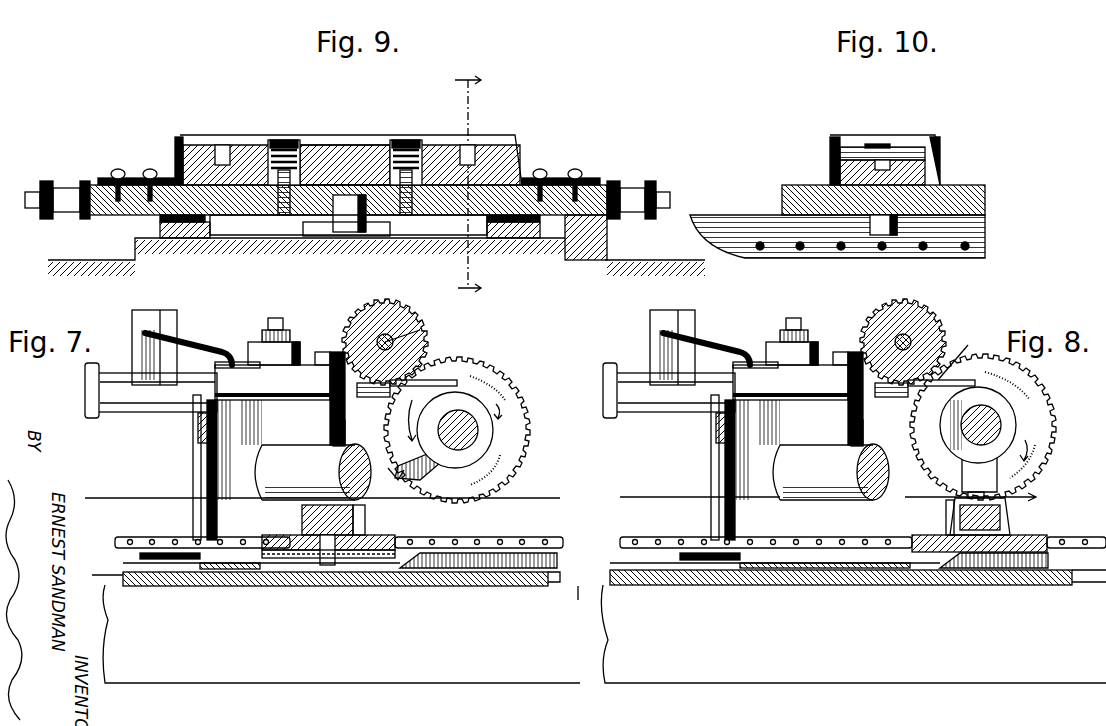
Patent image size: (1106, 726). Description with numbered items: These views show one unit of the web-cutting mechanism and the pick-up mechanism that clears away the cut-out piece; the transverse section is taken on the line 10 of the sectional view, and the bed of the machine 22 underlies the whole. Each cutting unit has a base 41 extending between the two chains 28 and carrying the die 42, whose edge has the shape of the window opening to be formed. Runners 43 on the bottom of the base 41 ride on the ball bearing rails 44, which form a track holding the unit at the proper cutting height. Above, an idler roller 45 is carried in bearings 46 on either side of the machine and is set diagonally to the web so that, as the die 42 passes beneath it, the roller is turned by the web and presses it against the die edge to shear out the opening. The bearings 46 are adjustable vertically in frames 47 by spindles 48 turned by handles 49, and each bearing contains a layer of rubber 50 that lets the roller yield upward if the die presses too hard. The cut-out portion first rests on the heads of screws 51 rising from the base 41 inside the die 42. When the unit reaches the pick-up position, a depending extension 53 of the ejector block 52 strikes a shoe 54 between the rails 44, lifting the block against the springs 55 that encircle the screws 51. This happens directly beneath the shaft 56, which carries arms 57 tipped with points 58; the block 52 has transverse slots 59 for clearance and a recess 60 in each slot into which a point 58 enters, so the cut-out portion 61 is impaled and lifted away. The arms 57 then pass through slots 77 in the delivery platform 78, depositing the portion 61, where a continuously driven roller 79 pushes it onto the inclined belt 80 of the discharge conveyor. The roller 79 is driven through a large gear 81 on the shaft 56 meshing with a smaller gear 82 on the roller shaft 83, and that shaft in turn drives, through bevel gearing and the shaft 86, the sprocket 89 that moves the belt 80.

In FIG. 9, the section line 10 is at (476, 180).
In FIG. 7, the machine bed 22 is at (336, 629).
In FIG. 8, the machine bed 22 is at (853, 634).
In FIG. 9, the chains 28 is at (53, 183).
In FIG. 7, the chains 28 is at (512, 537).
In FIG. 8, the chains 28 is at (1080, 537).
In FIG. 9, the base 41 is at (440, 212).
In FIG. 10, the base 41 is at (797, 185).
In FIG. 7, the base 41 is at (398, 545).
In FIG. 8, the base 41 is at (925, 552).
In FIG. 9, the die 42 is at (523, 158).
In FIG. 10, the die 42 is at (940, 153).
In FIG. 7, the die 42 is at (365, 521).
In FIG. 9, the runners 43 is at (160, 219).
In FIG. 7, the runners 43 is at (378, 562).
In FIG. 9, the ball bearing rails 44 is at (180, 240).
In FIG. 7, the ball bearing rails 44 is at (190, 578).
In FIG. 8, the ball bearing rails 44 is at (728, 578).
In FIG. 7, the idler roller 45 is at (313, 472).
In FIG. 8, the idler roller 45 is at (831, 472).
In FIG. 7, the bearings 46 is at (205, 455).
In FIG. 7, the frames 47 is at (207, 470).
In FIG. 8, the frames 47 is at (700, 470).
In FIG. 7, the spindles 48 is at (280, 318).
In FIG. 7, the handles 49 is at (205, 345).
In FIG. 8, the handles 49 is at (706, 335).
In FIG. 7, the layer of rubber 50 is at (198, 430).
In FIG. 9, the screws 51 is at (285, 147).
In FIG. 10, the screws 51 is at (878, 144).
In FIG. 9, the ejector block 52 is at (332, 145).
In FIG. 10, the ejector block 52 is at (925, 175).
In FIG. 7, the ejector block 52 is at (312, 530).
In FIG. 8, the ejector block 52 is at (1005, 512).
In FIG. 9, the depending extension 53 is at (352, 232).
In FIG. 10, the depending extension 53 is at (882, 235).
In FIG. 7, the depending extension 53 is at (334, 566).
In FIG. 9, the shoe 54 is at (315, 236).
In FIG. 7, the shoe 54 is at (470, 568).
In FIG. 8, the shoe 54 is at (975, 568).
In FIG. 9, the springs 55 is at (275, 150).
In FIG. 7, the shaft 56 is at (470, 414).
In FIG. 8, the shaft 56 is at (1003, 412).
In FIG. 7, the arms 57 is at (430, 466).
In FIG. 8, the arms 57 is at (960, 466).
In FIG. 7, the points 58 is at (396, 474).
In FIG. 8, the points 58 is at (950, 512).
In FIG. 9, the transverse slots 59 is at (470, 147).
In FIG. 10, the transverse slots 59 is at (852, 147).
In FIG. 9, the recess 60 is at (517, 138).
In FIG. 10, the recess 60 is at (889, 164).
In FIG. 8, the cut-out portion 61 is at (1000, 492).
In FIG. 7, the slots 77 is at (443, 380).
In FIG. 8, the slots 77 is at (951, 352).
In FIG. 7, the delivery platform 78 is at (370, 398).
In FIG. 8, the delivery platform 78 is at (879, 414).
In FIG. 7, the roller 79 is at (416, 340).
In FIG. 8, the roller 79 is at (904, 333).
In FIG. 8, the inclined belt 80 is at (698, 428).
In FIG. 7, the large gear 81 is at (515, 402).
In FIG. 8, the large gear 81 is at (1043, 430).
In FIG. 7, the smaller gear 82 is at (378, 302).
In FIG. 7, the shaft 83 is at (378, 340).
In FIG. 7, the shaft 86 is at (226, 362).
In FIG. 8, the shaft 86 is at (755, 347).
In FIG. 7, the sprocket 89 is at (92, 418).
In FIG. 8, the sprocket 89 is at (668, 407).